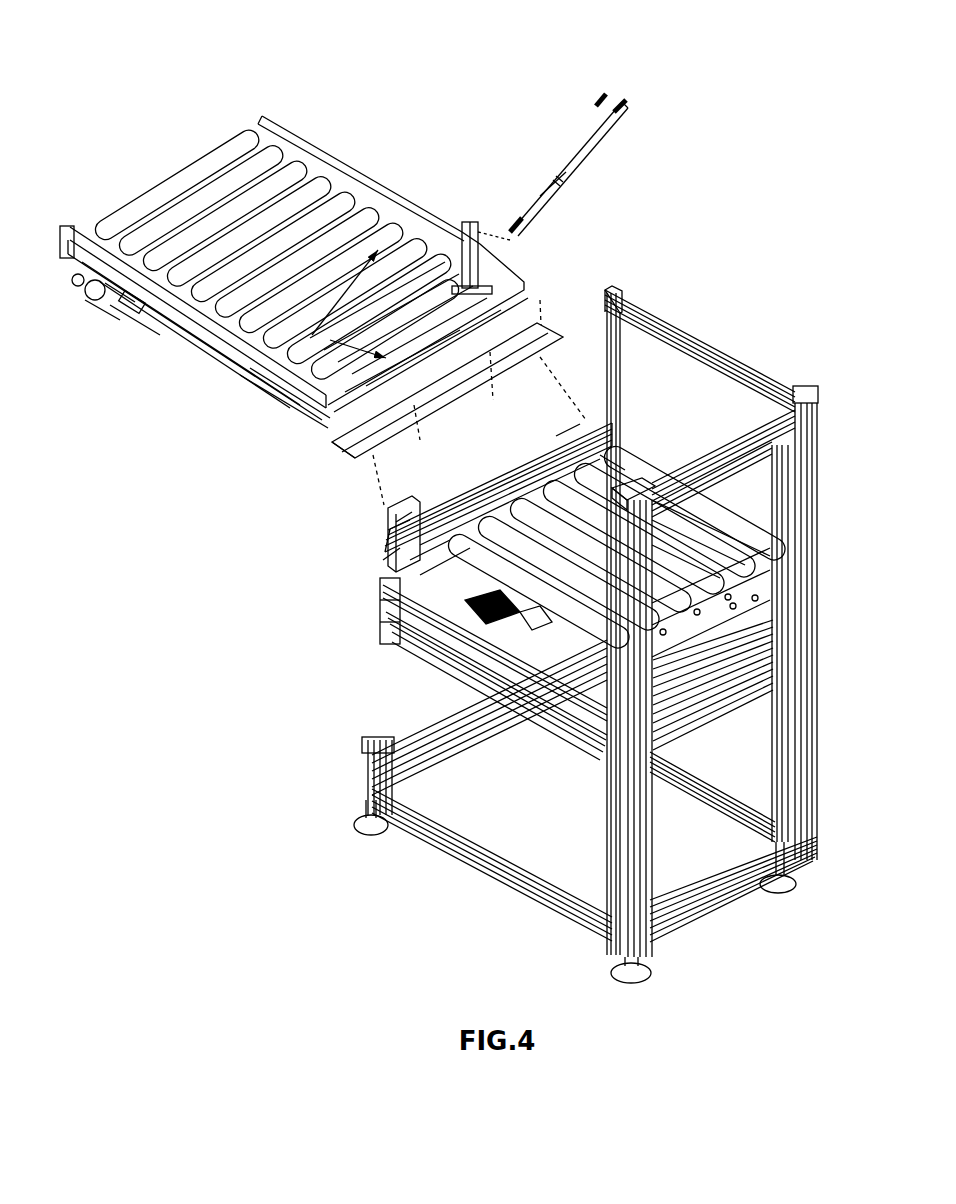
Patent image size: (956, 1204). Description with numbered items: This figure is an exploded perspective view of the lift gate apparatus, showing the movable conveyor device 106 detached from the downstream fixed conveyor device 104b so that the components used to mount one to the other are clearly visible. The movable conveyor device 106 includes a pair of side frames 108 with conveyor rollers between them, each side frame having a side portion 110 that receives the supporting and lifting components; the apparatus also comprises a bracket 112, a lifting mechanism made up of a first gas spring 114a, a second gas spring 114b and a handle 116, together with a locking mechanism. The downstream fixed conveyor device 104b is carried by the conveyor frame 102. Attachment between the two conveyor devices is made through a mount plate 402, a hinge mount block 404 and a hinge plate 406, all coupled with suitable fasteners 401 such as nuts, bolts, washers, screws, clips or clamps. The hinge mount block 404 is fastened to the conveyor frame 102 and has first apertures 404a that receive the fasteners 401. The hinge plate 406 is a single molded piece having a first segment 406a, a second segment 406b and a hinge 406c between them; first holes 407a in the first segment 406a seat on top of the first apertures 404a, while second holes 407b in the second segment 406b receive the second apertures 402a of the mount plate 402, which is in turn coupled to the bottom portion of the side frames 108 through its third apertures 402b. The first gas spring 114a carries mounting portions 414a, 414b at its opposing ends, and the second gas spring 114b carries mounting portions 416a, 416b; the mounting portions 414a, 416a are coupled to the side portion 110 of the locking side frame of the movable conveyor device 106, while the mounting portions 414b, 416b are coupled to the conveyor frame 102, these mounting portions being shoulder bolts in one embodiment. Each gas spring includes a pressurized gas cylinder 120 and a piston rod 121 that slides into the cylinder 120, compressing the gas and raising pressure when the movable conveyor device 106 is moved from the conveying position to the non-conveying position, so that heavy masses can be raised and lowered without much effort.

The conveyor frame 102 is at (380, 613).
The downstream fixed conveyor device 104b is at (616, 482).
The movable conveyor device 106 is at (370, 146).
The side frames 108 is at (126, 270).
The side portion 110 is at (210, 320).
The bracket 112 is at (308, 390).
The first gas spring 114a is at (258, 378).
The second gas spring 114b is at (594, 162).
The handle 116 is at (135, 326).
The pressurized gas cylinder 120 is at (600, 100).
The piston rod 121 is at (550, 186).
The fasteners 401 is at (394, 524).
The mount plate 402 is at (560, 322).
The second apertures 402a is at (520, 237).
The third apertures 402b is at (330, 445).
The hinge mount block 404 is at (386, 570).
The first apertures 404a is at (388, 556).
The hinge plate 406 is at (602, 412).
The first segment 406a is at (437, 524).
The second segment 406b is at (487, 476).
The hinge 406c is at (548, 442).
The first holes 407a is at (566, 430).
The second holes 407b is at (386, 526).
The mounting portion 414a is at (330, 372).
The mounting portion 414b is at (380, 249).
The mounting portion 416a is at (513, 228).
The mounting portion 416b is at (630, 108).